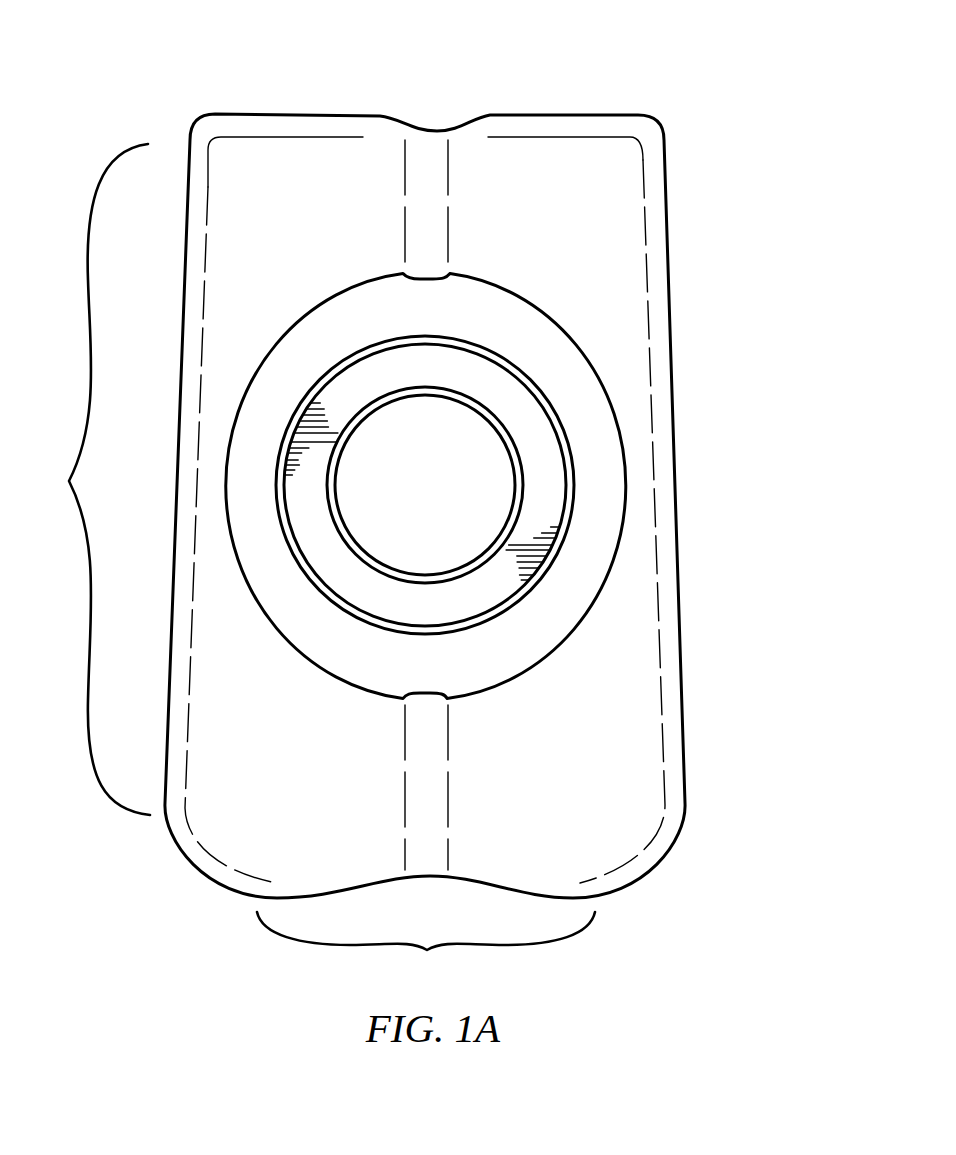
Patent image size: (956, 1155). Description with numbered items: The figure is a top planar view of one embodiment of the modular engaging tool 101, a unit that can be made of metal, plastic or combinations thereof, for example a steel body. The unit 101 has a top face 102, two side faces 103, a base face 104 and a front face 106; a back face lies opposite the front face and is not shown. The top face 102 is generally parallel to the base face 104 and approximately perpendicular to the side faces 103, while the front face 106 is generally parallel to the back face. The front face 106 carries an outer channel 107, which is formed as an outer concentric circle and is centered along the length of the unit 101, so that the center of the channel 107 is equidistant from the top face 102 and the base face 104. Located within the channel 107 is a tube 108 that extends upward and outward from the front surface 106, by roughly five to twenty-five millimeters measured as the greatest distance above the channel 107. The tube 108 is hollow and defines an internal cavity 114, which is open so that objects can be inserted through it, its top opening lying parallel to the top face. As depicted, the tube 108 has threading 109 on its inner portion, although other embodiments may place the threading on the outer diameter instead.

The engaging tool 101 is at (770, 44).
The top face 102 is at (435, 99).
The side faces 103 is at (87, 479).
The base face 104 is at (426, 946).
The front face 106 is at (685, 743).
The outer channel 107 is at (567, 615).
The tube 108 is at (513, 402).
The threading 109 is at (512, 458).
The internal cavity 114 is at (443, 507).